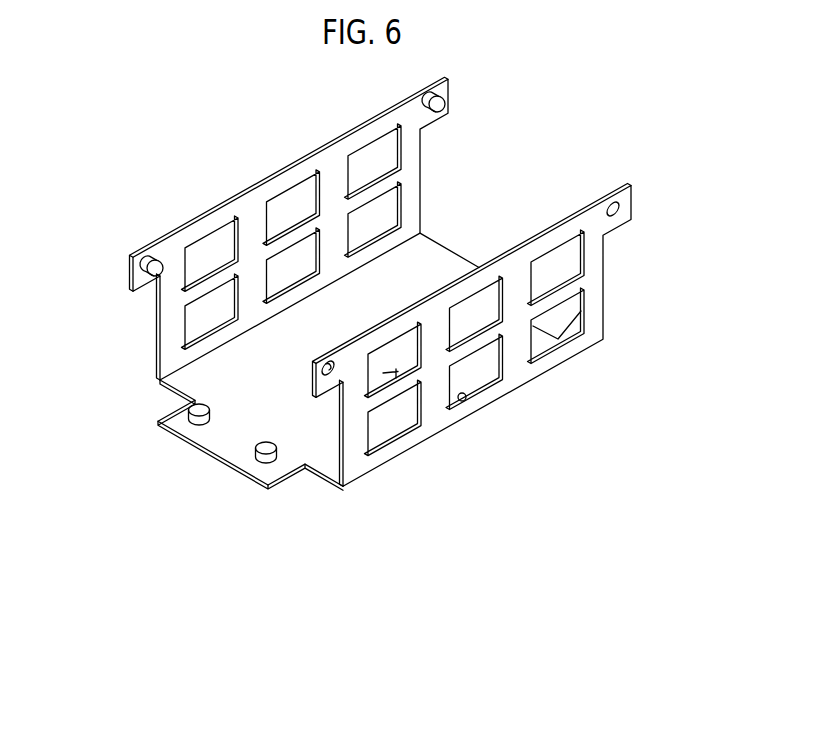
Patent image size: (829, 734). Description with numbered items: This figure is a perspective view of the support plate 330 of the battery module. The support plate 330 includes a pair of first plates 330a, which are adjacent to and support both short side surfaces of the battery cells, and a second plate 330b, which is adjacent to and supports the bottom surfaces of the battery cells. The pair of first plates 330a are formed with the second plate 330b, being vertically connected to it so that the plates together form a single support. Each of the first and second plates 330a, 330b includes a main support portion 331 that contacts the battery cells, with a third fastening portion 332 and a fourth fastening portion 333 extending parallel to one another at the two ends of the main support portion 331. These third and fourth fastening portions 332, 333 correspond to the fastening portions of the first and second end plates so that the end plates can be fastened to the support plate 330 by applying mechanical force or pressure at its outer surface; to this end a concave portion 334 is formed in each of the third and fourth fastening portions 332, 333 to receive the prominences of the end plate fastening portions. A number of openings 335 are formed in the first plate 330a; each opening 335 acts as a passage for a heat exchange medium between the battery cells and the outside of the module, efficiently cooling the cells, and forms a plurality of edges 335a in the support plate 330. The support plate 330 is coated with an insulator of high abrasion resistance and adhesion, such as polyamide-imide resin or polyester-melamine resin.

The support plate 330 is at (560, 108).
The first plate 330a is at (149, 238).
The second plate 330b is at (295, 481).
The main support portion 331 is at (457, 287).
The third fastening portion 332 is at (322, 381).
The fourth fastening portion 333 is at (624, 224).
The concave portion 334 is at (326, 363).
The opening 335 is at (394, 375).
The edge 335a is at (467, 401).